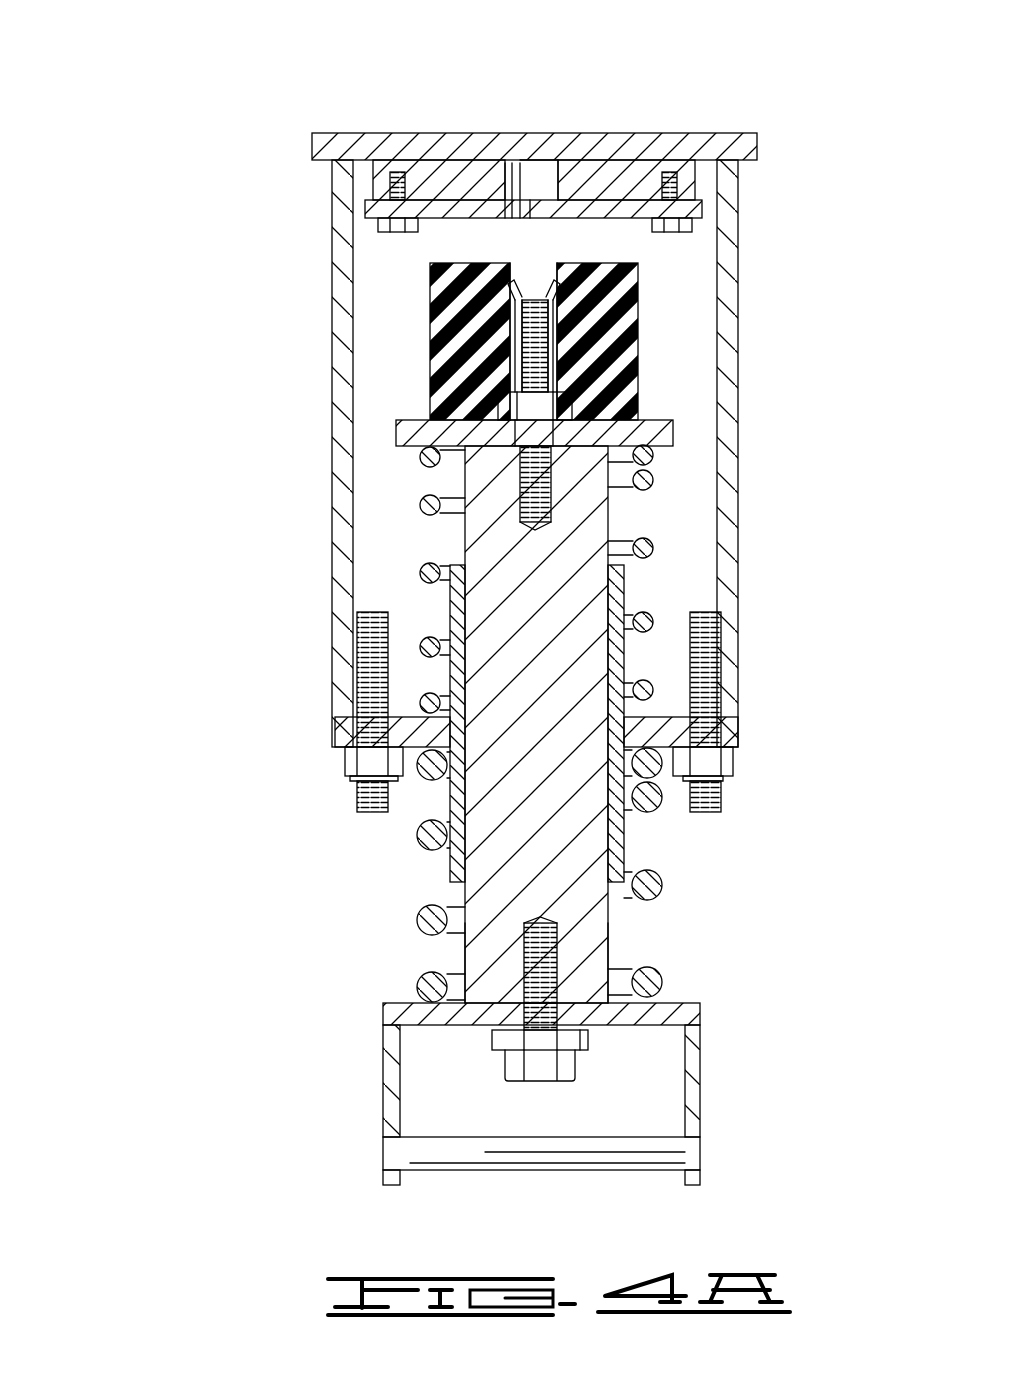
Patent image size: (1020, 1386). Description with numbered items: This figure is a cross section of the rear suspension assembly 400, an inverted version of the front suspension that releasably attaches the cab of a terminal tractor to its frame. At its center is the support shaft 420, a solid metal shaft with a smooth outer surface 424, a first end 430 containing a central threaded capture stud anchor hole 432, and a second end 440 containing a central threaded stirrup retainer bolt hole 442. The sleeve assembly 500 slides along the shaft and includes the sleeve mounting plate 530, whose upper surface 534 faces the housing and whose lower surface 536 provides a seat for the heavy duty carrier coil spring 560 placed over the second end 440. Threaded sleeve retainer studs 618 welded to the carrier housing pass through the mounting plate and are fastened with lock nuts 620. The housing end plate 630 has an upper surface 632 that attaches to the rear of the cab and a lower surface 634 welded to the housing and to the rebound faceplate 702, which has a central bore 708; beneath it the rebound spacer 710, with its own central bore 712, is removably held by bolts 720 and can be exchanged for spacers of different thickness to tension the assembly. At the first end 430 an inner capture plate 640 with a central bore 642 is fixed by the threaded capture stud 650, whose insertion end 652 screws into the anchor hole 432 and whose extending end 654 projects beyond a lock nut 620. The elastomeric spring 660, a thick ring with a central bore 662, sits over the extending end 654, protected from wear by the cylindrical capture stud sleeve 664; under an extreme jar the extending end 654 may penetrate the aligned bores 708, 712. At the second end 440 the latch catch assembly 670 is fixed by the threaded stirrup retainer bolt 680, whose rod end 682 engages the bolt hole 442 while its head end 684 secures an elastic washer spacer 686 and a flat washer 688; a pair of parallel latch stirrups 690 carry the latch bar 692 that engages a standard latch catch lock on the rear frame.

The rear suspension assembly 400 is at (250, 108).
The support shaft 420 is at (475, 535).
The smooth outer surface 424 is at (615, 510).
The first end 430 is at (620, 556).
The central threaded capture stud anchor hole 432 is at (620, 474).
The second end 440 is at (620, 955).
The central threaded stirrup retainer bolt hole 442 is at (615, 905).
The sleeve assembly 500 is at (735, 740).
The sleeve mounting plate 530 is at (410, 735).
The upper surface 534 is at (375, 665).
The lower surface 536 is at (350, 762).
The carrier coil spring 560 is at (455, 838).
The threaded sleeve retainer studs 618 is at (715, 655).
The lock nut 620 is at (568, 400).
The housing end plate 630 is at (680, 140).
The upper surface 632 is at (445, 135).
The lower surface 634 is at (325, 163).
The inner capture plate 640 is at (660, 432).
The central bore 642 is at (500, 430).
The threaded capture stud 650 is at (440, 380).
The insertion end 652 is at (520, 495).
The extending end 654 is at (520, 340).
The elastomeric spring 660 is at (628, 320).
The central bore 662 is at (540, 270).
The cylindrical capture stud sleeve 664 is at (430, 300).
The latch catch assembly 670 is at (700, 1012).
The threaded stirrup retainer bolt 680 is at (535, 985).
The rod end 682 is at (535, 955).
The head end 684 is at (400, 1105).
The elastic washer spacer 686 is at (495, 1040).
The flat washer 688 is at (590, 1045).
The latch stirrups 690 is at (700, 1108).
The latch bar 692 is at (490, 1152).
The rebound faceplate 702 is at (606, 172).
The central bore 708 is at (510, 165).
The rebound spacer 710 is at (705, 209).
The central bore 712 is at (548, 172).
The bolts 720 is at (388, 233).